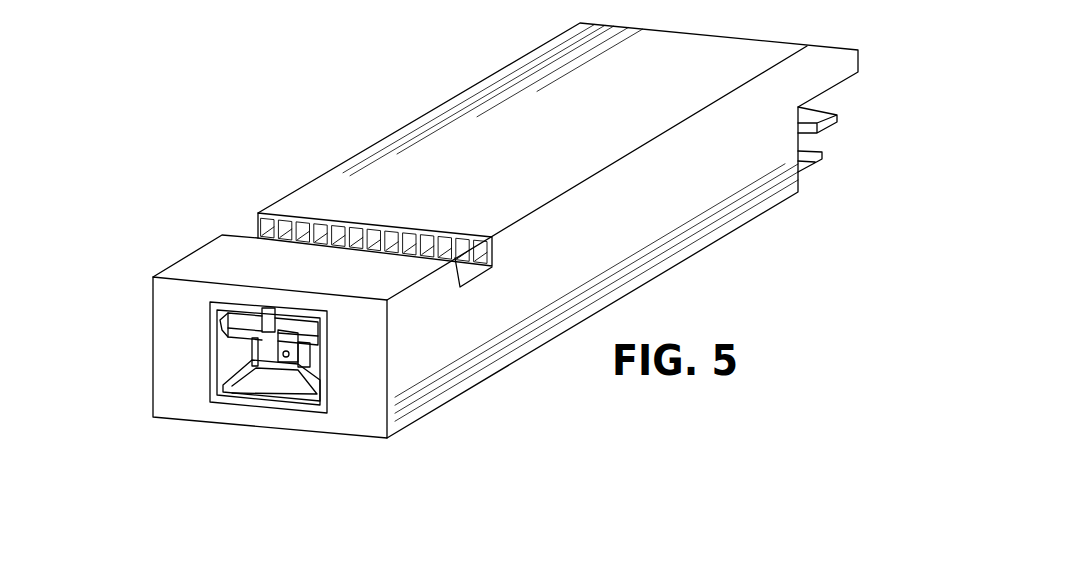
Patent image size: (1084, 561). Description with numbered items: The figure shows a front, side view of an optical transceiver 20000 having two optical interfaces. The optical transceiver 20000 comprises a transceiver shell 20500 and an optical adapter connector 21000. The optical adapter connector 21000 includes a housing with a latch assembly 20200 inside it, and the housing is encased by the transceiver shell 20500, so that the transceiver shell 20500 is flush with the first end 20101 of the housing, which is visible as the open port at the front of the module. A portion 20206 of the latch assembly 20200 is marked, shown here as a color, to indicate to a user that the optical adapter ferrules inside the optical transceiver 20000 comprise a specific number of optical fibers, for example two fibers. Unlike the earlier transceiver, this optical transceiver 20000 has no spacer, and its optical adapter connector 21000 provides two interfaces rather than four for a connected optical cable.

The optical transceiver 20000 is at (355, 116).
The transceiver shell 20500 is at (468, 87).
The optical adapter connector 21000 is at (244, 390).
The first end 20101 is at (210, 342).
The portion of latch assembly 20206 is at (308, 333).
The latch assembly 20200 is at (257, 390).